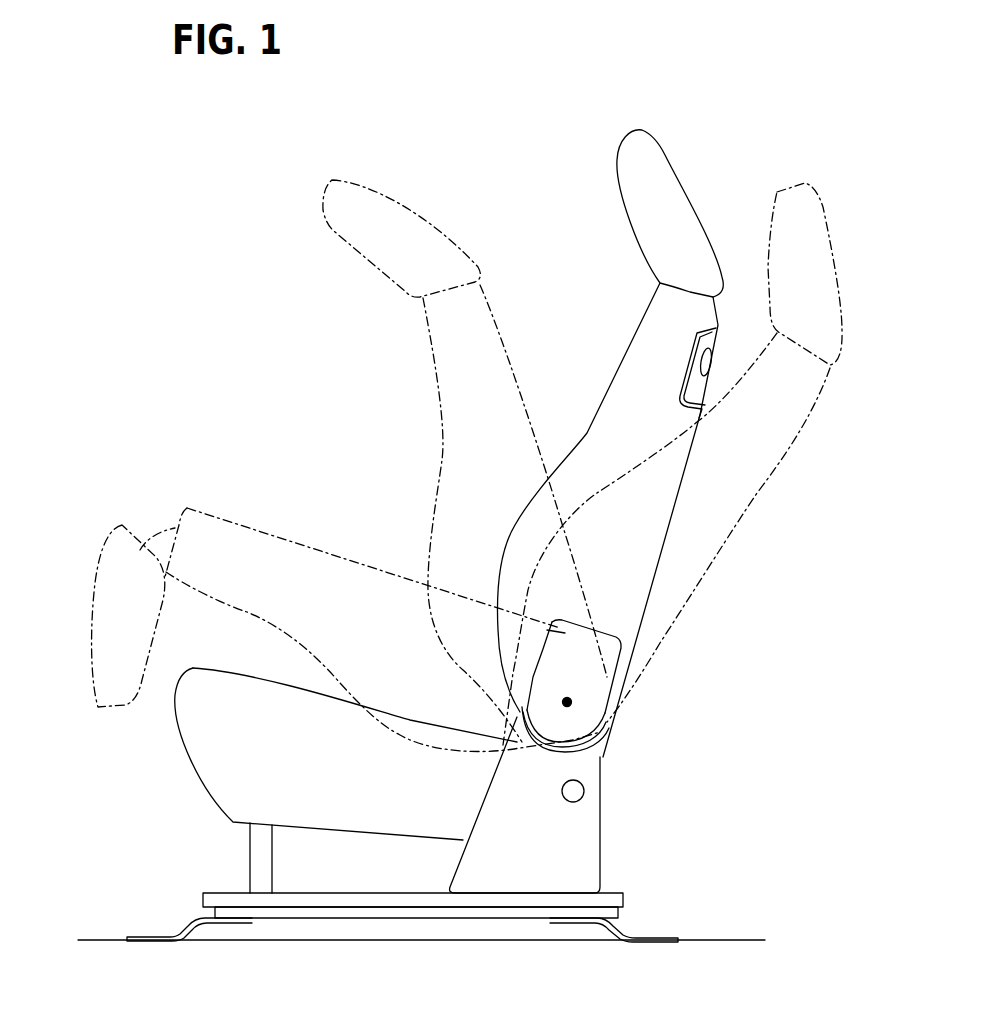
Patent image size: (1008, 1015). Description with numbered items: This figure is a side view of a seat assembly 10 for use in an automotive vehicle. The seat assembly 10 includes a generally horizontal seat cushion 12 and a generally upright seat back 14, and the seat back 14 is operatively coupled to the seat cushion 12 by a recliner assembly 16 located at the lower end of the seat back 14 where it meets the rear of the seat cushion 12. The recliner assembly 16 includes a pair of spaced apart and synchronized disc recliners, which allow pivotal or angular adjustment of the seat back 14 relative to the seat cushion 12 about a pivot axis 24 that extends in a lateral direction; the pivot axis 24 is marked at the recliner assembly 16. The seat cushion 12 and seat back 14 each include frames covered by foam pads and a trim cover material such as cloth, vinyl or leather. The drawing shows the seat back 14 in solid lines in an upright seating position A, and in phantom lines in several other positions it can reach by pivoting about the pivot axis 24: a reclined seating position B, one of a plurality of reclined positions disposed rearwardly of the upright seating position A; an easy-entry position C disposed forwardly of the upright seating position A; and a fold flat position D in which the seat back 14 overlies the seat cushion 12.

The seat assembly 10 is at (527, 252).
The seat cushion 12 is at (217, 741).
The seat back 14 is at (608, 425).
The recliner assembly 16 is at (593, 713).
The pivot axis 24 is at (567, 702).
The upright seating position A is at (661, 143).
The reclined seating position B is at (822, 207).
The easy-entry position C is at (328, 227).
The fold flat position D is at (228, 518).